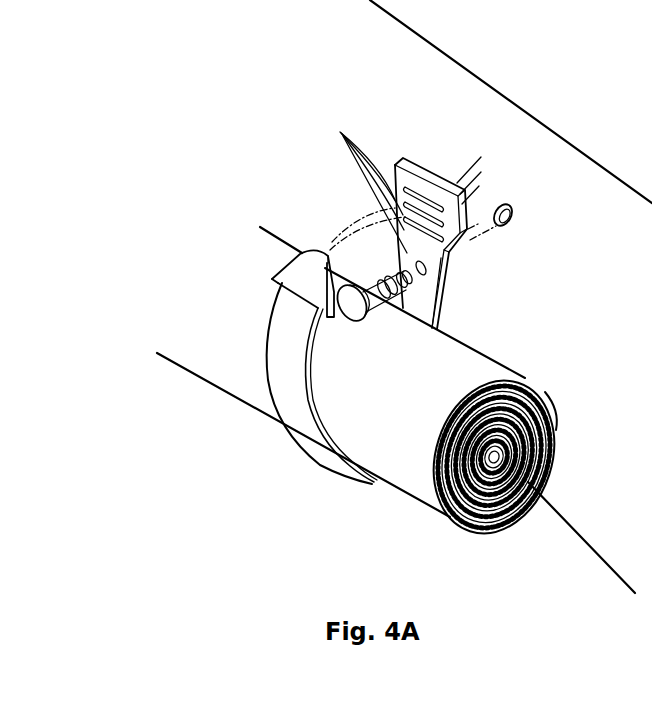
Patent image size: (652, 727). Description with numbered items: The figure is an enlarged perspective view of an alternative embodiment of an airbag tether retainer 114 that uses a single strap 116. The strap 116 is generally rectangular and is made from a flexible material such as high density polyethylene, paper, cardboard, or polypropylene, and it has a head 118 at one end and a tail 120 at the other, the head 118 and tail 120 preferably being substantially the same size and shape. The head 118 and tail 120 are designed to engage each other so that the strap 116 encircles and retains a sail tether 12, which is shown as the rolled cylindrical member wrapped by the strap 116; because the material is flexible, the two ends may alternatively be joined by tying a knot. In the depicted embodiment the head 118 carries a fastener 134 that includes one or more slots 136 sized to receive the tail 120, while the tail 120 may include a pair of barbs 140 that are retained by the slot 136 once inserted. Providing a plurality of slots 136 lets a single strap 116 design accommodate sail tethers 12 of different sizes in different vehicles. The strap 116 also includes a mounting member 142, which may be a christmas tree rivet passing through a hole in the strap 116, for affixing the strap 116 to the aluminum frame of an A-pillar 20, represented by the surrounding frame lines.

The sail tether 12 is at (410, 467).
The A-pillar 20 is at (615, 264).
The airbag tether retainer 114 is at (310, 452).
The strap 116 is at (302, 402).
The head 118 is at (427, 162).
The tail 120 is at (276, 265).
The fastener 134 is at (478, 206).
The slot 136 is at (340, 132).
The barbs 140 is at (272, 282).
The mounting member 142 is at (358, 322).